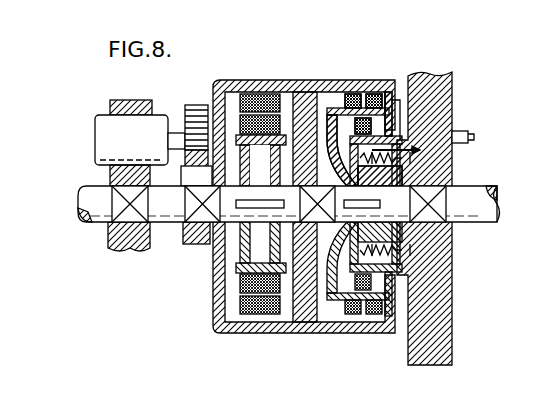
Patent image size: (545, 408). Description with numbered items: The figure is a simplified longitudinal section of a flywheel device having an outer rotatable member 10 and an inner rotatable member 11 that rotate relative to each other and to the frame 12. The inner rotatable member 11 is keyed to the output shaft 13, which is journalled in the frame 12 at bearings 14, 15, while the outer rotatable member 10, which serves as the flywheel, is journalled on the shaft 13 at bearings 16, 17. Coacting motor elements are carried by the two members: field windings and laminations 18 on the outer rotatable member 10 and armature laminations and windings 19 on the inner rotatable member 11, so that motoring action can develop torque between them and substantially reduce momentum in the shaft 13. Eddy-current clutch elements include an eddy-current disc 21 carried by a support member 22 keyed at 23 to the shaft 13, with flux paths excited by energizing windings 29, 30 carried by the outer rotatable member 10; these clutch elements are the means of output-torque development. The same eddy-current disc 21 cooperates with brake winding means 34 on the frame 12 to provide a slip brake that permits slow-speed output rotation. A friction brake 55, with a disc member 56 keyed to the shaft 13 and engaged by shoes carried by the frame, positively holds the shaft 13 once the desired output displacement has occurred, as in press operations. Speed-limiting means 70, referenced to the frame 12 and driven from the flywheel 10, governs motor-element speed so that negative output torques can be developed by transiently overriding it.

The outer rotatable member 10 is at (225, 84).
The inner rotatable member 11 is at (301, 197).
The frame 12 is at (428, 72).
The shaft 13 is at (498, 216).
The bearing 14 is at (110, 245).
The bearing 15 is at (448, 198).
The bearing 16 is at (197, 244).
The bearing 17 is at (360, 159).
The field windings and laminations 18 is at (268, 92).
The armature laminations and windings 19 is at (260, 165).
The eddy-current disc 21 is at (396, 92).
The support member 22 is at (349, 92).
The key 23 is at (366, 196).
The energizing winding 29 is at (372, 92).
The energizing winding 30 is at (388, 92).
The winding means 34 is at (400, 150).
The friction brake 55 is at (370, 226).
The disc member 56 is at (440, 156).
The speed-limiting means 70 is at (97, 136).